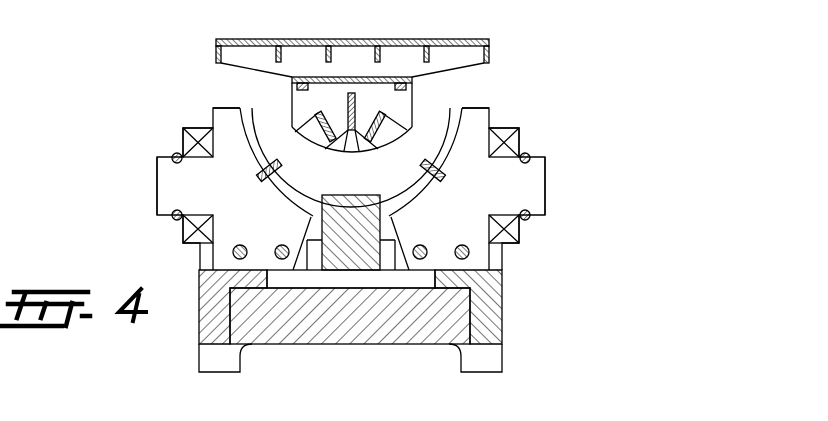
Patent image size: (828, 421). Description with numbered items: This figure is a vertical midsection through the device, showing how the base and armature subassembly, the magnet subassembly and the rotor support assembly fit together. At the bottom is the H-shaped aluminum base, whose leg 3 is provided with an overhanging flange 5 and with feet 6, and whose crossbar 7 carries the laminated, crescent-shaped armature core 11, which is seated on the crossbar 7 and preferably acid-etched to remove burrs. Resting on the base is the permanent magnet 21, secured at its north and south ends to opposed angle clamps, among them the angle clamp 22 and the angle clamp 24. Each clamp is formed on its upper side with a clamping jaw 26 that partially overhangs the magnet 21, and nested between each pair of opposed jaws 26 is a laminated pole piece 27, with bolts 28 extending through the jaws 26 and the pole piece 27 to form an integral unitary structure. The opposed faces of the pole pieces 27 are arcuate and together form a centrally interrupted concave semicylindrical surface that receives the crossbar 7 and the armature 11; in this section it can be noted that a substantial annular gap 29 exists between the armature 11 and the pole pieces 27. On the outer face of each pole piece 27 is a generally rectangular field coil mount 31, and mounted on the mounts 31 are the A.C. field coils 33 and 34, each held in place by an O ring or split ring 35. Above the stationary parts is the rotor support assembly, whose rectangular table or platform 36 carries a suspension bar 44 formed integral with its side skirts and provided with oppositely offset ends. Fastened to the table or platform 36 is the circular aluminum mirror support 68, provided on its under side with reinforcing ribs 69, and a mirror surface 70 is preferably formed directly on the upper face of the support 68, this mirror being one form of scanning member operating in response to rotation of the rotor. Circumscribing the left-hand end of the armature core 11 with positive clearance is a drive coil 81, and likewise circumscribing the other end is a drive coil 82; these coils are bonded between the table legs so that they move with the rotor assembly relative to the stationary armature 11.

The mirror surface 70 is at (355, 39).
The mirror support 68 is at (490, 45).
The reinforcing ribs 69 is at (437, 66).
The table or platform 36 is at (372, 77).
The annular gap 29 is at (250, 106).
The drive coil 81 is at (318, 113).
The suspension bar 44 is at (355, 100).
The drive coil 82 is at (390, 113).
The A.C. field coil 34 is at (207, 130).
The A.C. field coil 33 is at (508, 131).
The O ring or split ring 35 is at (173, 153).
The field coil mount 31 is at (157, 183).
The laminated pole piece 27 is at (240, 197).
The armature core 11 is at (318, 172).
The crossbar 7 is at (353, 195).
The overhanging flange 5 is at (310, 225).
The bolts 28 is at (280, 245).
The clamping jaw 26 is at (414, 247).
The leg 3 is at (356, 288).
The angle clamp 22 is at (502, 312).
The angle clamp 24 is at (205, 330).
The permanent magnet 21 is at (338, 335).
The feet 6 is at (228, 372).